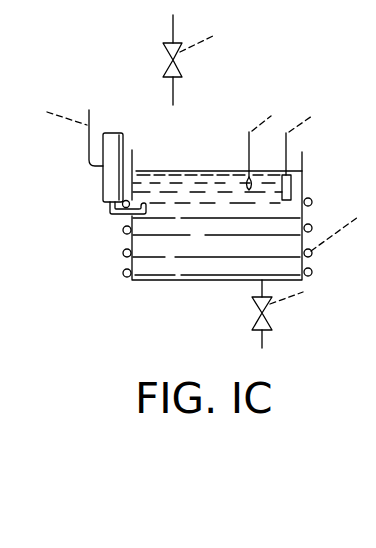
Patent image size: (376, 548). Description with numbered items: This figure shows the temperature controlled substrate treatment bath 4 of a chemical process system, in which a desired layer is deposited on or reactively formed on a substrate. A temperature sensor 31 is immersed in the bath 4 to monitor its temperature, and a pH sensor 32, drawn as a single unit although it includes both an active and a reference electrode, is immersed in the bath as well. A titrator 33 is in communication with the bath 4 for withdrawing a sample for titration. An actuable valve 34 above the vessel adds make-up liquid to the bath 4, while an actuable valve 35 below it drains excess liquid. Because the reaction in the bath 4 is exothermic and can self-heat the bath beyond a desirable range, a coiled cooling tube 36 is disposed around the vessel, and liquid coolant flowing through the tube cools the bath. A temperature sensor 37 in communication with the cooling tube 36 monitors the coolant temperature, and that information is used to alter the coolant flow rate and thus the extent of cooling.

The temperature controlled substrate treatment bath 4 is at (166, 262).
The temperature sensor 31 is at (248, 147).
The pH sensor 32 is at (286, 148).
The titrator 33 is at (106, 203).
The actuable valve 34 is at (172, 60).
The actuable valve 35 is at (258, 312).
The coiled cooling tube 36 is at (312, 203).
The temperature sensor 37 is at (311, 256).